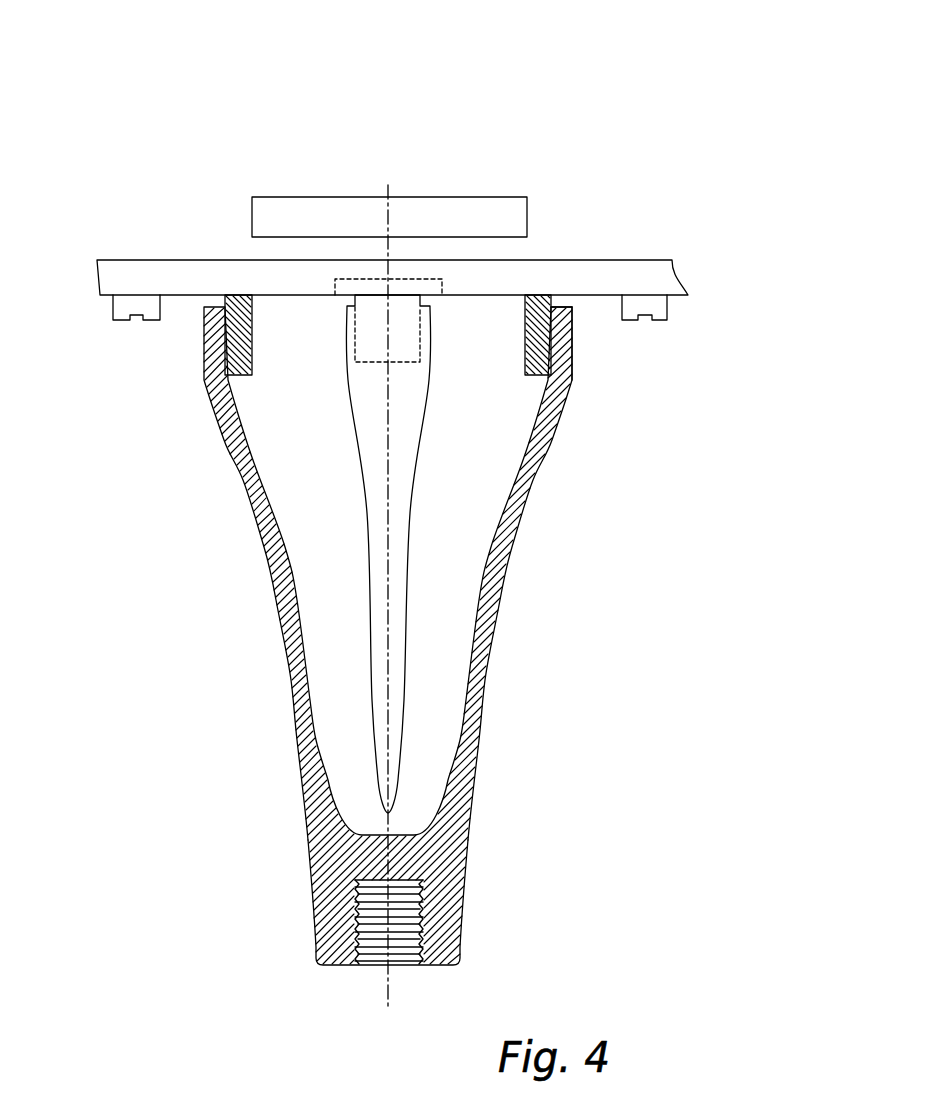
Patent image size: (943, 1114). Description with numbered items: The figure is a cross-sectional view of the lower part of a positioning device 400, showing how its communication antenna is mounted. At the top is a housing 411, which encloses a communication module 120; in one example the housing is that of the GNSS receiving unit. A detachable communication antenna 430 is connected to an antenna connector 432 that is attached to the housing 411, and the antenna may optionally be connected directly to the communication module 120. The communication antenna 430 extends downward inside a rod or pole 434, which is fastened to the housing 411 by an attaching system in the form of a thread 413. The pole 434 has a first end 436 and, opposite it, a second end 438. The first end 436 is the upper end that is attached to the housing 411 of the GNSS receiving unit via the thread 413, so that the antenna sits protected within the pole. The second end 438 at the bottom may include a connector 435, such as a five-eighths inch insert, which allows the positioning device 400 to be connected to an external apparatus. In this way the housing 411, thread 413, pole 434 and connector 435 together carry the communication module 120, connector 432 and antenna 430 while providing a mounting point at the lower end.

The positioning device 400 is at (183, 102).
The communication module 120 is at (483, 208).
The housing 411 is at (112, 277).
The thread 413 is at (222, 335).
The antenna connector 432 is at (410, 335).
The first end 436 is at (597, 356).
The communication antenna 430 is at (388, 513).
The pole 434 is at (490, 657).
The second end 438 is at (463, 913).
The connector 435 is at (400, 946).